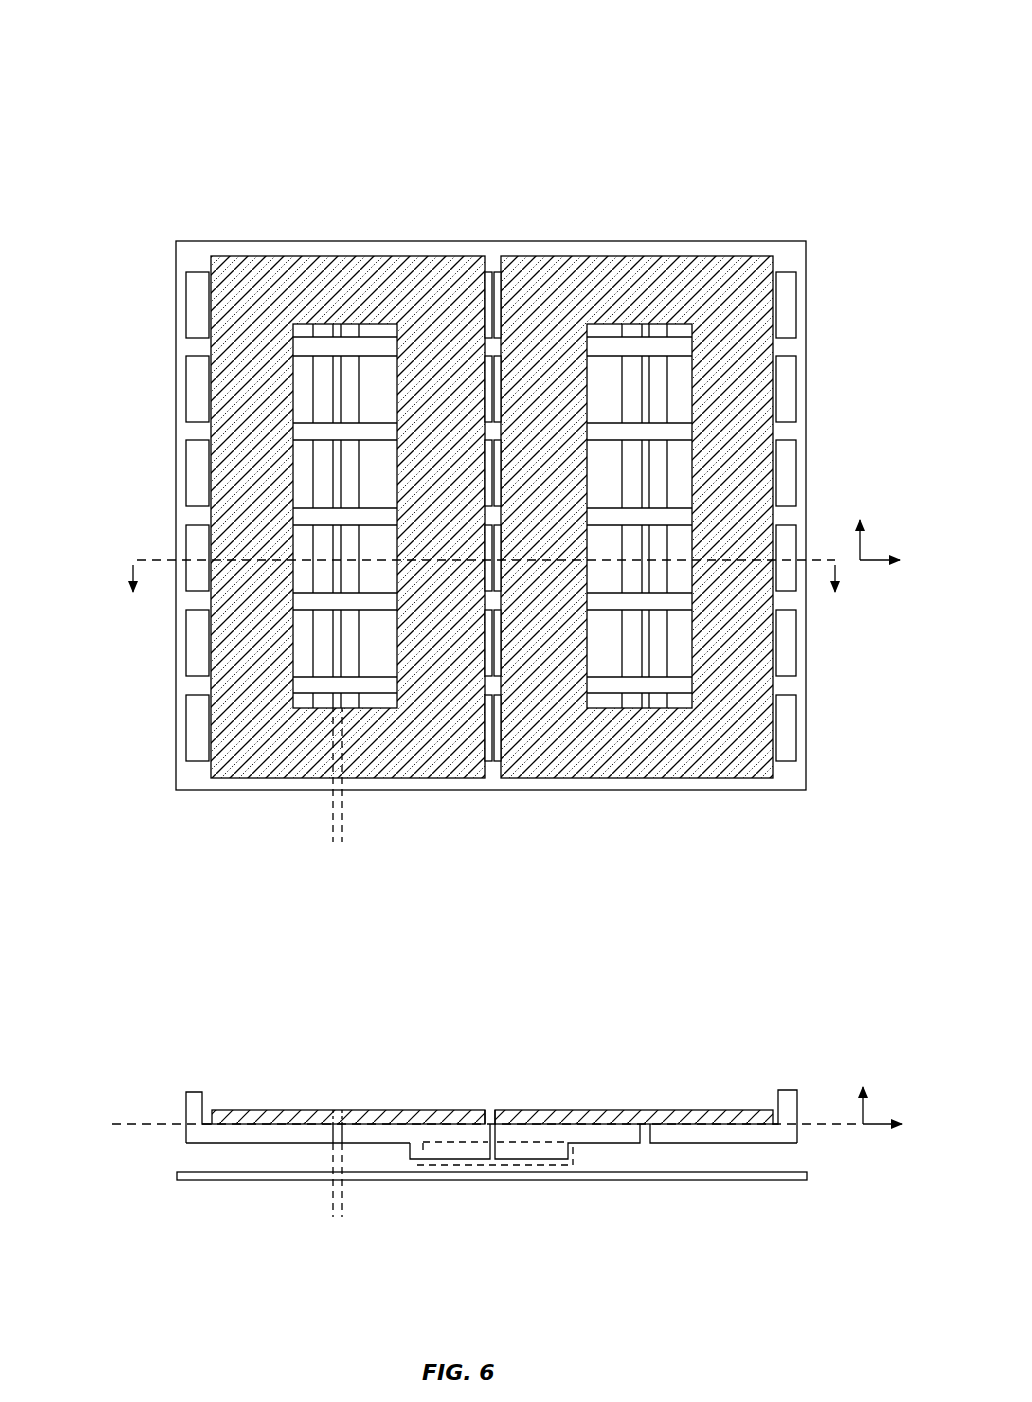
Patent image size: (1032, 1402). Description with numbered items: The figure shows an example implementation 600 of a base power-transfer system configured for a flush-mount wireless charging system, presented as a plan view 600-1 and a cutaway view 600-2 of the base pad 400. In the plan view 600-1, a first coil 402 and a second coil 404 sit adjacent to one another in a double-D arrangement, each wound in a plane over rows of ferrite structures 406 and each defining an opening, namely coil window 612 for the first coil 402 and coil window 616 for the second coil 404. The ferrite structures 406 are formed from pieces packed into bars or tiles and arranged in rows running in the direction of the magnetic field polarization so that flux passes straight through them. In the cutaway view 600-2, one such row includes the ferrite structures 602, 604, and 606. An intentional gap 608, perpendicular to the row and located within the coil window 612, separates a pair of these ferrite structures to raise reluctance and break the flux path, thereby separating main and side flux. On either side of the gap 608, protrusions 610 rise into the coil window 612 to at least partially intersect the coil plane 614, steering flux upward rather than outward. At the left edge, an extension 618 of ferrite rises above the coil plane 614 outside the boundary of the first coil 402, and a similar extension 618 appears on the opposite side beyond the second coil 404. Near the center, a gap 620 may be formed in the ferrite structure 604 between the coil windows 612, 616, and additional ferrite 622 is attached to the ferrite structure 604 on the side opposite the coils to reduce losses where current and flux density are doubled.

The example implementation 600 is at (783, 52).
The plan view 600-1 is at (155, 150).
The cutaway view 600-2 is at (165, 993).
The base pad 400 is at (163, 232).
The first coil 402 is at (397, 256).
The second coil 404 is at (711, 256).
The ferrite structures 406 is at (205, 545).
The ferrite structure 602 is at (220, 1137).
The ferrite structure 604 is at (558, 1130).
The ferrite structure 606 is at (747, 1137).
The gap 608 is at (372, 833).
The protrusions 610 is at (352, 1120).
The coil window 612 is at (337, 324).
The coil plane 614 is at (137, 1123).
The coil window 616 is at (644, 324).
The extension 618 is at (186, 1092).
The gap 620 is at (493, 1120).
The additional ferrite 622 is at (568, 1165).